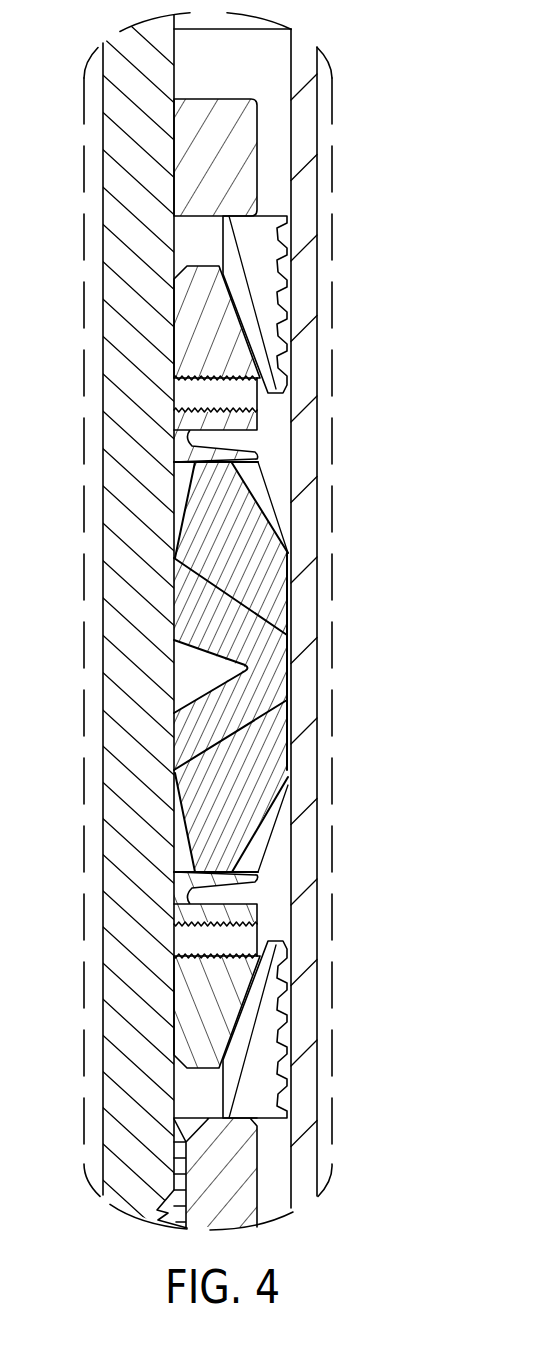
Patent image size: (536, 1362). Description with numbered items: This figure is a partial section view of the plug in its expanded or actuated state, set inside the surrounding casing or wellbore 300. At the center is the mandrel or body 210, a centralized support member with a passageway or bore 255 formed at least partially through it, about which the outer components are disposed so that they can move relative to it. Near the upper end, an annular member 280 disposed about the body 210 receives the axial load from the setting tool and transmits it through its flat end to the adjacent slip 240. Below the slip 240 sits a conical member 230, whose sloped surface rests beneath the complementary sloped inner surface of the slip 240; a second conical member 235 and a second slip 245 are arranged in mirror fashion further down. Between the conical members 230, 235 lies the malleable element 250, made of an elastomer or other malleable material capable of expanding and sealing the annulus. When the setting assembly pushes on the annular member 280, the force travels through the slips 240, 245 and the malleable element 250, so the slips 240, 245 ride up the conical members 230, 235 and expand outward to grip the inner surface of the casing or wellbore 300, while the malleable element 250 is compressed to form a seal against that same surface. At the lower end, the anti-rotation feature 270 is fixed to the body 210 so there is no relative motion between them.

The body 210 is at (291, 31).
The bore 255 is at (257, 67).
The annular member 280 is at (257, 138).
The slip 240 is at (255, 275).
The conical member 230 is at (230, 422).
The malleable element 250 is at (280, 655).
The conical member 235 is at (243, 913).
The slip 245 is at (265, 1022).
The casing or wellbore 300 is at (305, 1108).
The anti-rotation feature 270 is at (247, 1176).